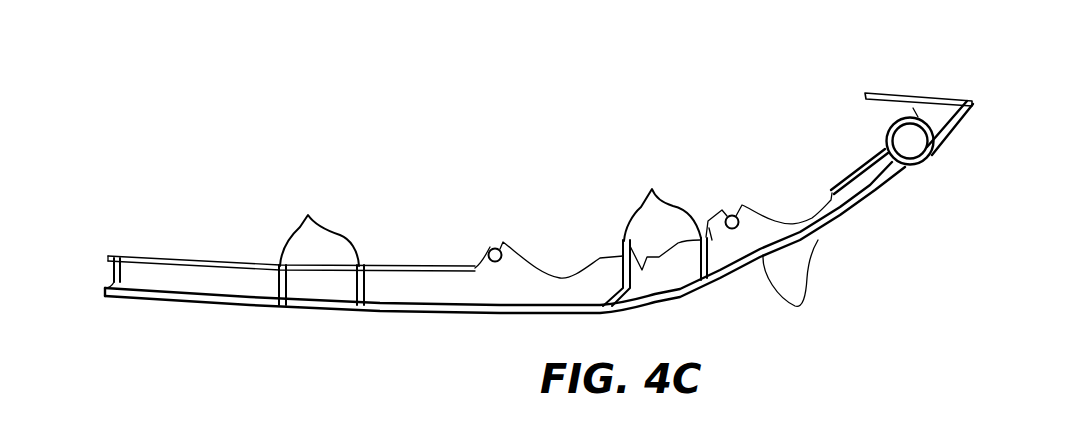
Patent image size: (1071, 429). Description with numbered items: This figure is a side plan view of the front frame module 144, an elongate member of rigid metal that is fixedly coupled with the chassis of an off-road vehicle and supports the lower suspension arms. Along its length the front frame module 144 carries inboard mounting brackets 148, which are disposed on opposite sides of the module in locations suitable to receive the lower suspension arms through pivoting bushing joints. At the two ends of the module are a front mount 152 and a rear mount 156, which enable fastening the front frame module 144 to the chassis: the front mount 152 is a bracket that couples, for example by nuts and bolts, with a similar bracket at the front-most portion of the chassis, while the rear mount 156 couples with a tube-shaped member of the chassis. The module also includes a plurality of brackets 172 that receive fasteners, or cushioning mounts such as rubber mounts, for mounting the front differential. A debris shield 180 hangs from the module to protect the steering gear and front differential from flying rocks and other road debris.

The front frame module 144 is at (356, 143).
The inboard mounting brackets 148 is at (493, 236).
The front mount 152 is at (888, 92).
The rear mount 156 is at (115, 281).
The brackets 172 is at (495, 243).
The debris shields 180 is at (808, 281).